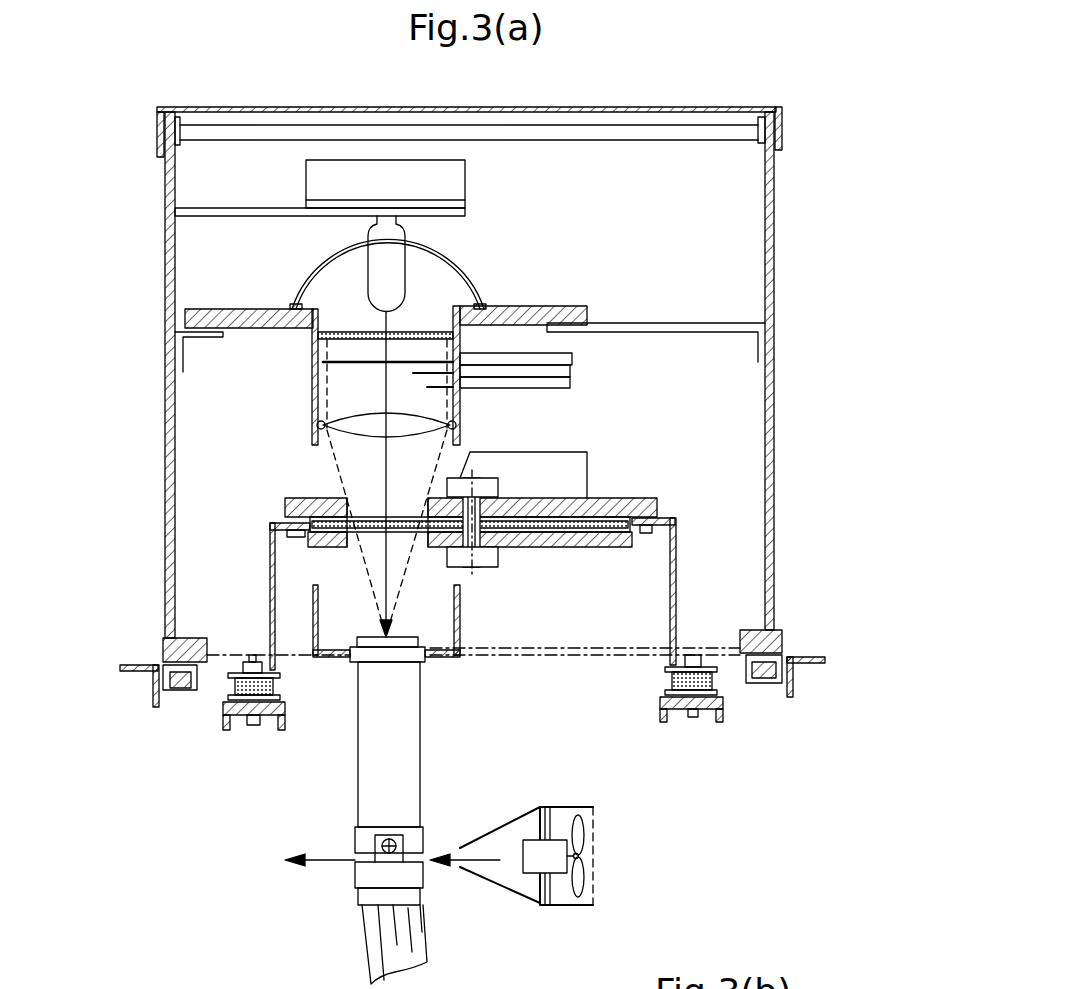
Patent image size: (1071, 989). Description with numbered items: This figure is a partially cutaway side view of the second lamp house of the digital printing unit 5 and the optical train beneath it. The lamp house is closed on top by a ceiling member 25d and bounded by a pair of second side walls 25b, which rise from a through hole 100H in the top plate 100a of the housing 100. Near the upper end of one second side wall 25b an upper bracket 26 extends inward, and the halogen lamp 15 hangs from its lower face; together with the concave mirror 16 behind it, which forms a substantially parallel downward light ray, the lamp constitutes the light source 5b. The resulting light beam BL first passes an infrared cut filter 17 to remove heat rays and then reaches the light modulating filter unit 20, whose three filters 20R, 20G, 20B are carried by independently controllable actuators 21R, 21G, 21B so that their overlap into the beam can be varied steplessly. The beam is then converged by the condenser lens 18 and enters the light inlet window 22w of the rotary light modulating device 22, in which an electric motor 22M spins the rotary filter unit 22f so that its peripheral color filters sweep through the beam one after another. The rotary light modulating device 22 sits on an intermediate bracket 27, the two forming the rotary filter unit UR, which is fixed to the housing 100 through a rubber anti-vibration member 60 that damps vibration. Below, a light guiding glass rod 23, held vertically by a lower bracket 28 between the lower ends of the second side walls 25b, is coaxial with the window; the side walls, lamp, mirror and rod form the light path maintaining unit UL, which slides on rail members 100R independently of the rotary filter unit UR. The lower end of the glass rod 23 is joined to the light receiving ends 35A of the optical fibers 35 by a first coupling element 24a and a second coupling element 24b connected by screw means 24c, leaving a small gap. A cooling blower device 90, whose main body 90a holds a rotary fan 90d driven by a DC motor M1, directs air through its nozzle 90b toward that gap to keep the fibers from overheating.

The ceiling member 25d is at (250, 106).
The digital printing unit 5 is at (632, 96).
The light path maintaining unit UL is at (772, 242).
The upper bracket 26 is at (249, 208).
The light source 5b is at (497, 212).
The second side walls 25b is at (168, 306).
The halogen lamp 15 is at (390, 245).
The concave mirror 16 is at (330, 266).
The light modulating filter unit 20 is at (375, 357).
The infrared cut filter 17 is at (423, 338).
The light modulating filter (R) 20R is at (344, 362).
The light modulating filter (G) 20G is at (425, 375).
The light modulating filter (B) 20B is at (432, 390).
The actuator (R) 21R is at (572, 358).
The actuator (G) 21G is at (570, 372).
The actuator (B) 21B is at (553, 388).
The condenser lens 18 is at (403, 432).
The light beam BL is at (335, 463).
The rotary filter unit UR is at (697, 498).
The rotary light modulating device 22 is at (285, 512).
The light inlet window 22w is at (372, 512).
The electric motor 22M is at (578, 470).
The intermediate bracket 27 is at (268, 594).
The rotary filter unit 22f is at (330, 600).
The lower bracket 28 is at (462, 621).
The light guiding glass rod 23 is at (421, 697).
The rail members 100R is at (185, 650).
The top plate 100a is at (153, 666).
The through hole 100H is at (161, 699).
The anti-vibration member 60 is at (276, 690).
The housing 100 is at (285, 718).
The first coupling element 24a is at (368, 838).
The screw means 24c is at (366, 875).
The second coupling element 24b is at (395, 855).
The light receiving ends 35A is at (360, 898).
The optical fibers 35 is at (368, 965).
The cooling blower device 90 is at (603, 824).
The main body 90a is at (558, 805).
The nozzle 90b is at (478, 838).
The DC motor M1 is at (553, 874).
The rotary fan 90d is at (580, 880).